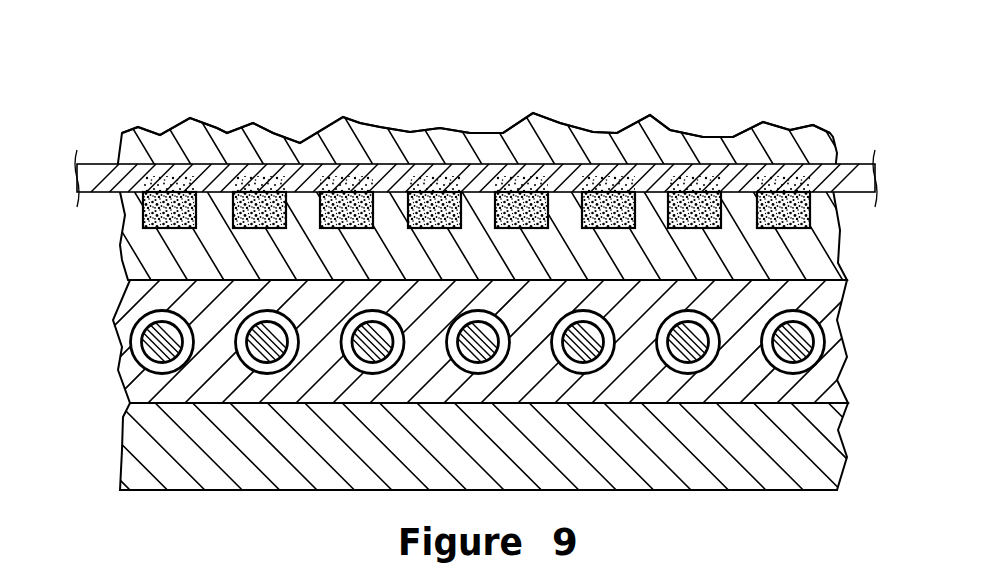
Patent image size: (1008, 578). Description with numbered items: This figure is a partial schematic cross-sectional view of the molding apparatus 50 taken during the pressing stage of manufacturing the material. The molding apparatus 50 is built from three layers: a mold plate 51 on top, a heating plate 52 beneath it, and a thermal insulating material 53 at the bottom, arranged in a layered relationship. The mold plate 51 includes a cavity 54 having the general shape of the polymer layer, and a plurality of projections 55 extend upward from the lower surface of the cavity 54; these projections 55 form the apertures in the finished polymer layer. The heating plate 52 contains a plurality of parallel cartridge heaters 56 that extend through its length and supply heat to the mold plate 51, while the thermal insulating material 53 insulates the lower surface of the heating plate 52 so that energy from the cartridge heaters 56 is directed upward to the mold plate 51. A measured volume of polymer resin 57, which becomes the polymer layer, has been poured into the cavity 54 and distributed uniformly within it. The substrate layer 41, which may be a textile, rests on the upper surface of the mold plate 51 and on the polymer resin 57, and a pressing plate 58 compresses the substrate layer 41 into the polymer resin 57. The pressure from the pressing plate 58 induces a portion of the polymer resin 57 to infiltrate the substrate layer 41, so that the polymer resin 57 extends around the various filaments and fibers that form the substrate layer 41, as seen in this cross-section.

The molding apparatus 50 is at (301, 77).
The mold plate 51 is at (120, 240).
The heating plate 52 is at (115, 338).
The thermal insulating material 53 is at (118, 437).
The cavity 54 is at (350, 229).
The projections 55 is at (224, 188).
The cartridge heaters 56 is at (141, 358).
The polymer resin 57 is at (426, 180).
The pressing plate 58 is at (168, 125).
The substrate layer 41 is at (92, 173).